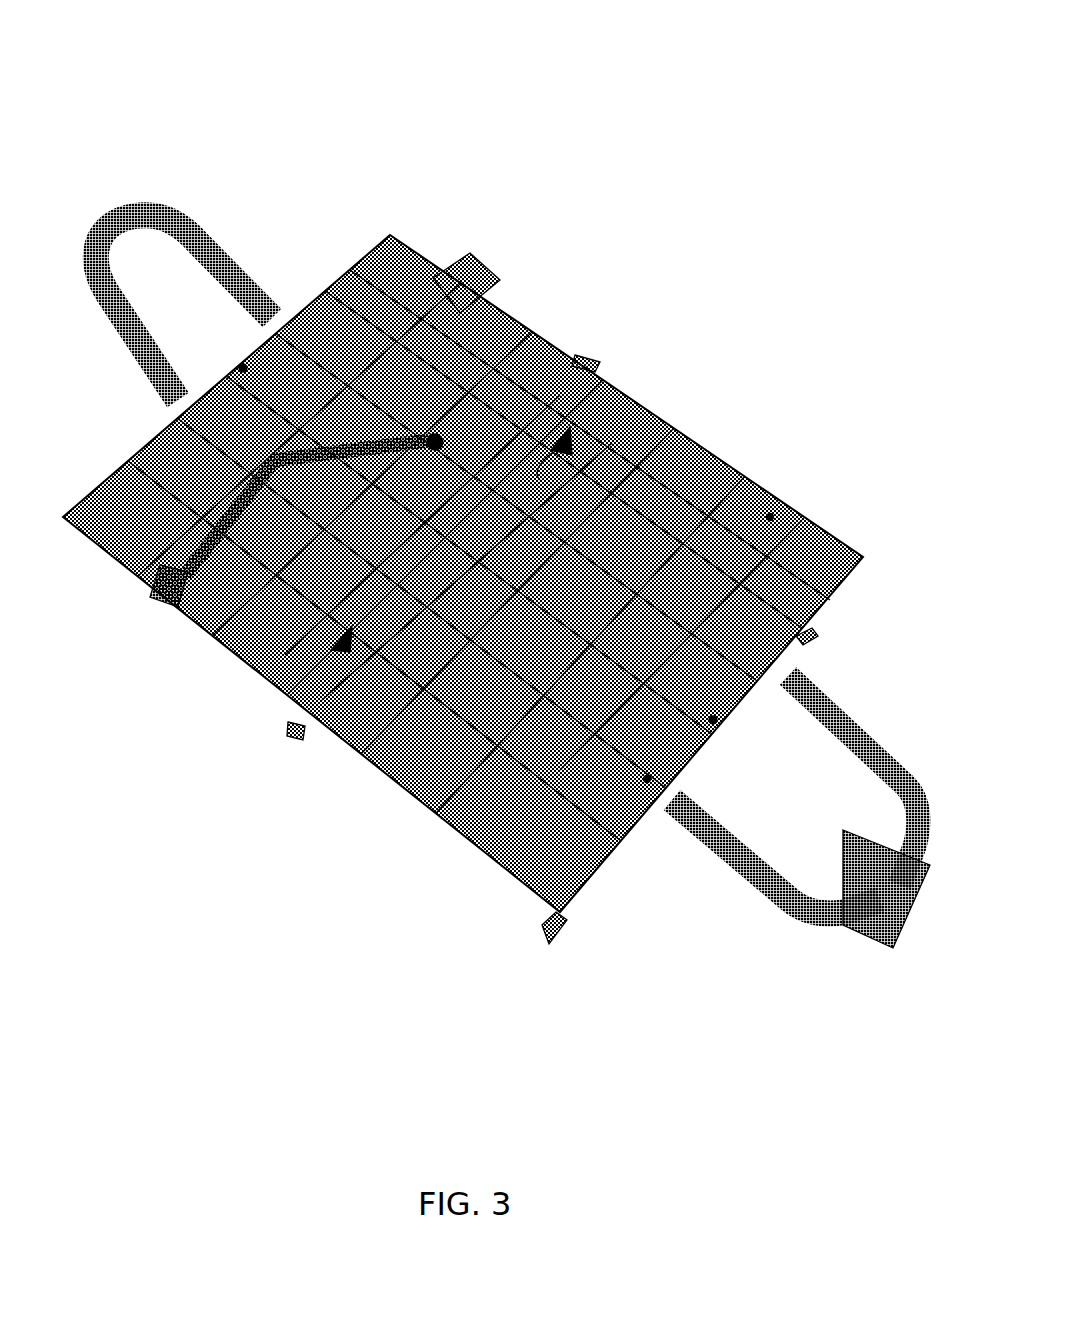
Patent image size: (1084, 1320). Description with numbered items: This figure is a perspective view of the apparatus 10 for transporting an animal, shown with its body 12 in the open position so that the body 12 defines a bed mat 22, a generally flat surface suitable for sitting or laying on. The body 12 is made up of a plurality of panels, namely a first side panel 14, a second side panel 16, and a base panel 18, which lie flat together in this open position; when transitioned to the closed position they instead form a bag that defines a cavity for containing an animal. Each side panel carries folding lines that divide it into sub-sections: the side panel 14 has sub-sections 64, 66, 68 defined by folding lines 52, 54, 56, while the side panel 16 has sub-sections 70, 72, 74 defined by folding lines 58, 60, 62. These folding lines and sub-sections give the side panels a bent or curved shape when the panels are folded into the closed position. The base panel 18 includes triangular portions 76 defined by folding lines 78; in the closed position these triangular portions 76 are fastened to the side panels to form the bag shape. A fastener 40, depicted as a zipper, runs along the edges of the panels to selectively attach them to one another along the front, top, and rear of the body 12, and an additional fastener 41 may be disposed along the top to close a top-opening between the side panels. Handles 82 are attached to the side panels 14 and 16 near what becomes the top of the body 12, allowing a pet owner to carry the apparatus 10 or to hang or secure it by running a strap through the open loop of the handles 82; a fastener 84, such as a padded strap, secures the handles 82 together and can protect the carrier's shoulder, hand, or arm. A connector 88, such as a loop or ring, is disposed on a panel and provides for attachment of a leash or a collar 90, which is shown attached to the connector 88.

The apparatus 10 is at (70, 78).
The body 12 is at (805, 256).
The side panel 14 is at (824, 426).
The side panel 16 is at (524, 230).
The base panel 18 is at (649, 303).
The bed mat 22 is at (817, 103).
The fastener 40 is at (418, 252).
The additional fastener 41 is at (302, 290).
The folding line 52 is at (720, 602).
The folding line 54 is at (662, 545).
The folding line 56 is at (524, 560).
The folding line 58 is at (470, 420).
The folding line 60 is at (414, 375).
The folding line 62 is at (366, 333).
The sub-section 64 is at (590, 544).
The sub-section 66 is at (563, 533).
The sub-section 68 is at (516, 520).
The sub-section 70 is at (469, 555).
The sub-section 72 is at (421, 603).
The sub-section 74 is at (374, 651).
The triangular portion 76 is at (451, 539).
The folding line 78 is at (560, 395).
The handle 82 is at (112, 224).
The fastener 84 is at (908, 888).
The connector 88 is at (180, 567).
The collar 90 is at (318, 445).